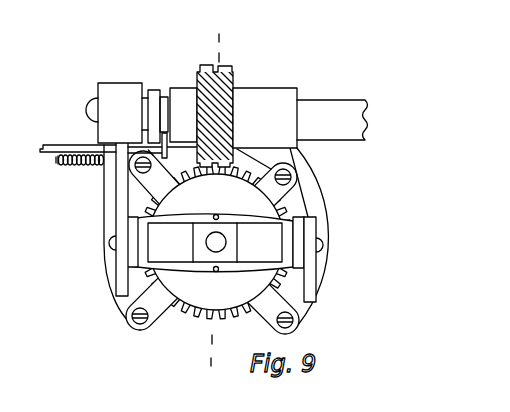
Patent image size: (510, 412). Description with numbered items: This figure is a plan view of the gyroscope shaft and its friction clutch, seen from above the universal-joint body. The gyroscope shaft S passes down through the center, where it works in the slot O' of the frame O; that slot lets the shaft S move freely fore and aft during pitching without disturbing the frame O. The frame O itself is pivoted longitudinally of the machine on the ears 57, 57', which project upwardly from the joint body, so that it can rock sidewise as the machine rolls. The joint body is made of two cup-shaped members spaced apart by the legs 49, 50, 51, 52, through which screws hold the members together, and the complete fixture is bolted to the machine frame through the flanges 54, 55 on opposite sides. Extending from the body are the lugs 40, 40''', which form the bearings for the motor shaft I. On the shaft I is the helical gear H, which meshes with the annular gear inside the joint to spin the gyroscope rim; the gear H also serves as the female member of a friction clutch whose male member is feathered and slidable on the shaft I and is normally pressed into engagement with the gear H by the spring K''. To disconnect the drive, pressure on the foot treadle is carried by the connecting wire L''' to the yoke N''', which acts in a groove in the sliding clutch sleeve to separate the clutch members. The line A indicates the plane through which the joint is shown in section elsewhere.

The section line A is at (213, 201).
The extension lug 40 is at (114, 113).
The yoke N''' is at (165, 97).
The stop piece N'' is at (173, 147).
The helical gear H is at (236, 72).
The extension lug 40''' is at (265, 118).
The motor shaft I is at (332, 120).
The connecting wire L''' is at (78, 139).
The spring K'' is at (80, 169).
The leg 49 is at (155, 178).
The leg 52 is at (267, 182).
The leg 50 is at (153, 303).
The leg 51 is at (272, 307).
The flange 54 is at (103, 233).
The flange 55 is at (329, 242).
The ear 57 is at (92, 216).
The ear 57' is at (329, 225).
The frame O is at (215, 230).
The slot O' is at (215, 242).
The gyroscope shaft S is at (206, 243).